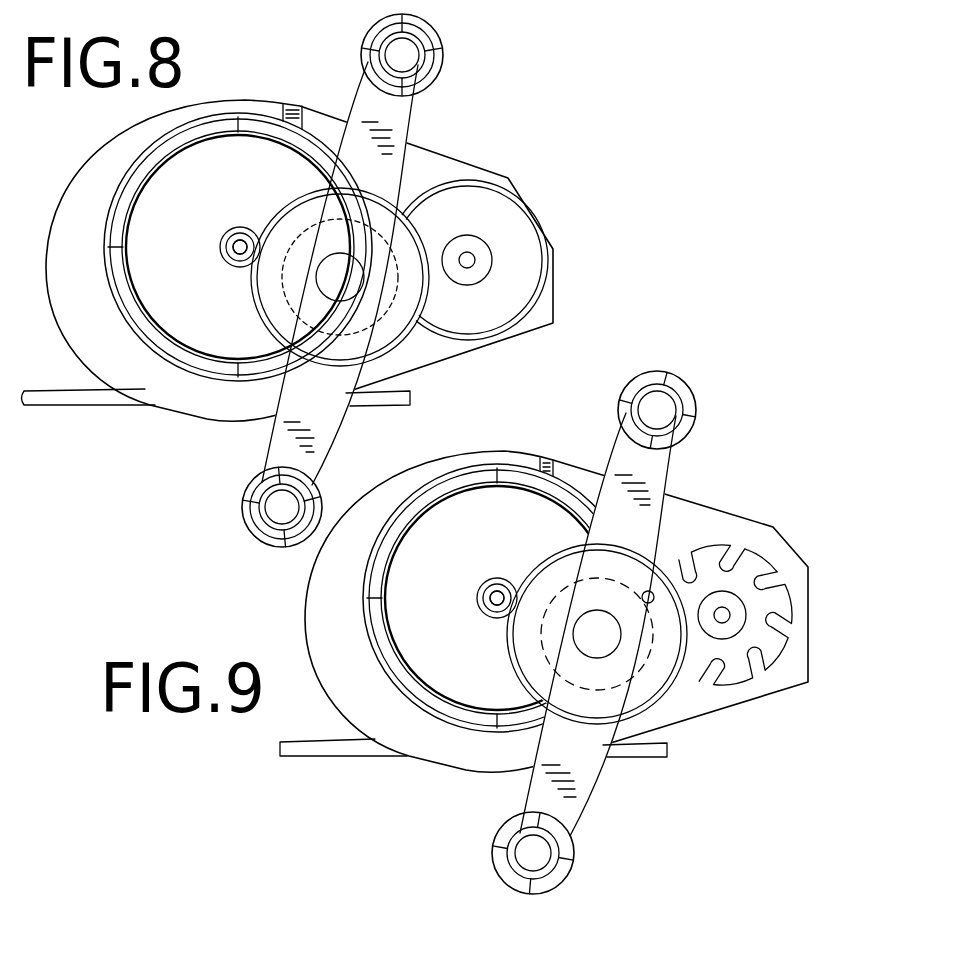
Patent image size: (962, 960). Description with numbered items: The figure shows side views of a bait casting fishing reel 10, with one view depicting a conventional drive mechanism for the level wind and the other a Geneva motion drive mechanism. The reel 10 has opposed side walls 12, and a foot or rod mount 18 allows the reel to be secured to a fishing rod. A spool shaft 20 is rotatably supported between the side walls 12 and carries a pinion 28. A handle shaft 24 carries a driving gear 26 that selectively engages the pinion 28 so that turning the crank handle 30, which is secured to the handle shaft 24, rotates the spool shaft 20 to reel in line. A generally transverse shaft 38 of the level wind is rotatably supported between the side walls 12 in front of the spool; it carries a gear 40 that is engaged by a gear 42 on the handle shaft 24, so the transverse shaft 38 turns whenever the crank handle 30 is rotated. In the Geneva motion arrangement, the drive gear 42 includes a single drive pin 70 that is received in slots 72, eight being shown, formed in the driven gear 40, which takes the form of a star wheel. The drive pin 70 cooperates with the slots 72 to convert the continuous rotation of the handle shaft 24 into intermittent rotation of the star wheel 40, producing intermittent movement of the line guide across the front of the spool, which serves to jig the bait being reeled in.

In FIG. 8, the fishing reel 10 is at (576, 154).
In FIG. 9, the fishing reel 10 is at (781, 486).
In FIG. 8, the side walls 12 is at (93, 163).
In FIG. 9, the side walls 12 is at (312, 575).
In FIG. 8, the foot or rod mount 18 is at (92, 405).
In FIG. 9, the foot or rod mount 18 is at (357, 756).
In FIG. 8, the spool shaft 20 is at (240, 229).
In FIG. 9, the spool shaft 20 is at (500, 590).
In FIG. 8, the handle shaft 24 is at (332, 283).
In FIG. 9, the handle shaft 24 is at (593, 640).
In FIG. 8, the driving gear 26 is at (412, 338).
In FIG. 9, the driving gear 26 is at (653, 705).
In FIG. 8, the pinion 28 is at (230, 258).
In FIG. 9, the pinion 28 is at (487, 608).
In FIG. 8, the crank handle 30 is at (368, 103).
In FIG. 9, the crank handle 30 is at (622, 463).
In FIG. 8, the transverse shaft 38 is at (469, 262).
In FIG. 9, the transverse shaft 38 is at (722, 620).
In FIG. 8, the gear 40 is at (483, 200).
In FIG. 8, the gear 42 is at (403, 324).
In FIG. 9, the drive pin 70 is at (652, 591).
In FIG. 9, the slots 72 is at (808, 640).